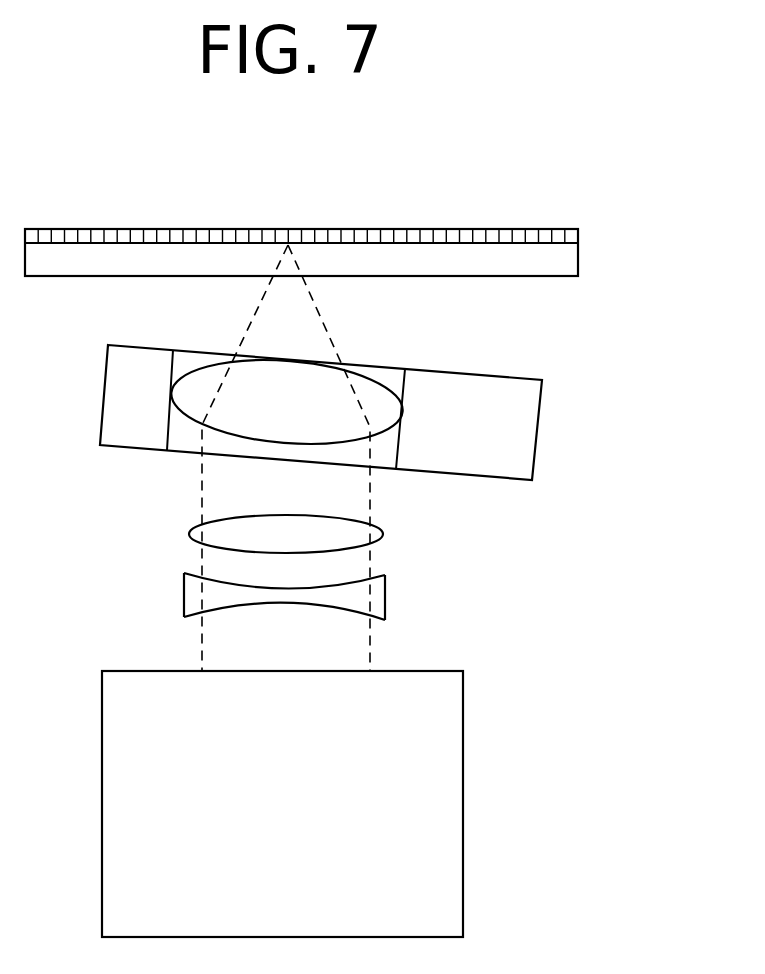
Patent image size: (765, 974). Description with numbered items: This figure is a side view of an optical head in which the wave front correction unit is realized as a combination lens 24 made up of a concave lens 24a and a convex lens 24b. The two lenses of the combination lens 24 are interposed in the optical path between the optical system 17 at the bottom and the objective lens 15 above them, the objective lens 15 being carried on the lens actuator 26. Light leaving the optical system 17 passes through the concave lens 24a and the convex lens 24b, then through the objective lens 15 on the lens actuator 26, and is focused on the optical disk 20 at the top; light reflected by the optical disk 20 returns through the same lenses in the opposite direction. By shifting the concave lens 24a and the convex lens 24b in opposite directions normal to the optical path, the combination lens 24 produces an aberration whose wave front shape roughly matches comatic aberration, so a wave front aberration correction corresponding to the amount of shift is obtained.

The optical disk 20 is at (593, 258).
The lens actuator 26 is at (524, 431).
The objective lens 15 is at (370, 403).
The combination lens 24 is at (268, 558).
The convex lens 24b is at (383, 534).
The concave lens 24a is at (385, 592).
The optical system 17 is at (442, 716).